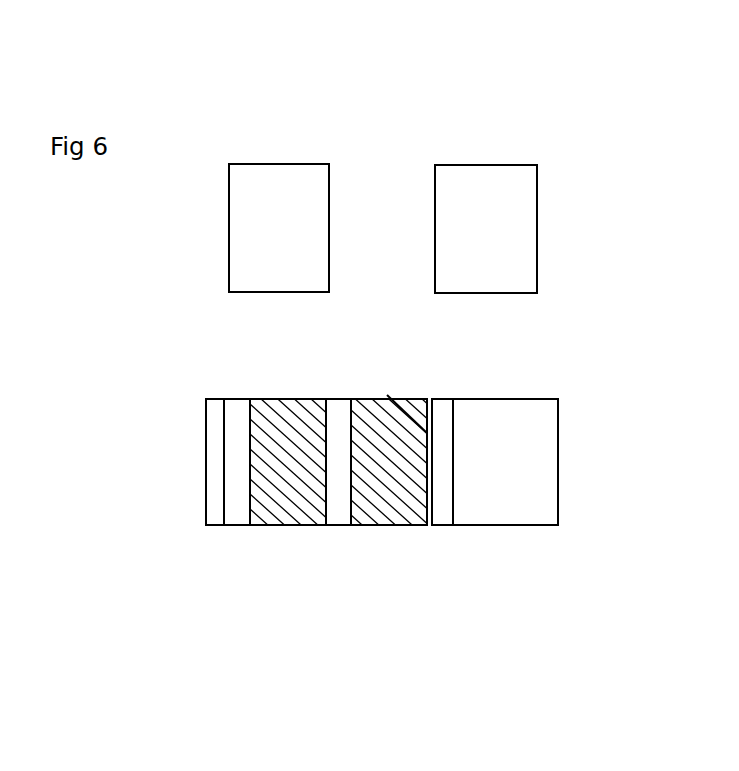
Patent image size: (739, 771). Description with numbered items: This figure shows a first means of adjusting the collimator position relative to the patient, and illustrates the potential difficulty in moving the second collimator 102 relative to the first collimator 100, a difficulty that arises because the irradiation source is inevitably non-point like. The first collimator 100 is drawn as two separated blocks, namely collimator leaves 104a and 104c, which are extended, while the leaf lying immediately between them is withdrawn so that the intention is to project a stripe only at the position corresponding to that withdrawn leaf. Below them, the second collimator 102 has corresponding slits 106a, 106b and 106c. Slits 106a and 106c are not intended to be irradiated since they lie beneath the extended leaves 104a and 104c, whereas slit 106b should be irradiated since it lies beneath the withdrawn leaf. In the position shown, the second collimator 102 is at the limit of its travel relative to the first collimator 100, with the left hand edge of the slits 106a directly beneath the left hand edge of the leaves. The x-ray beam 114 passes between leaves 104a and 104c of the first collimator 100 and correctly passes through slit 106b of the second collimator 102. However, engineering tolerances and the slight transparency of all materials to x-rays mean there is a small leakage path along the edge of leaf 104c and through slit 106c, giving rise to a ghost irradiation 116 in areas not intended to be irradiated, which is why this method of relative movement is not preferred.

The first collimator 100 is at (193, 261).
The second collimator 102 is at (217, 477).
The collimator leaf 104a is at (277, 182).
The collimator leaf 104c is at (529, 179).
The slit 106a is at (237, 510).
The slit 106b is at (330, 513).
The slit 106c is at (442, 512).
The x-ray beam 114 is at (425, 89).
The gap in substrate 116 is at (428, 647).